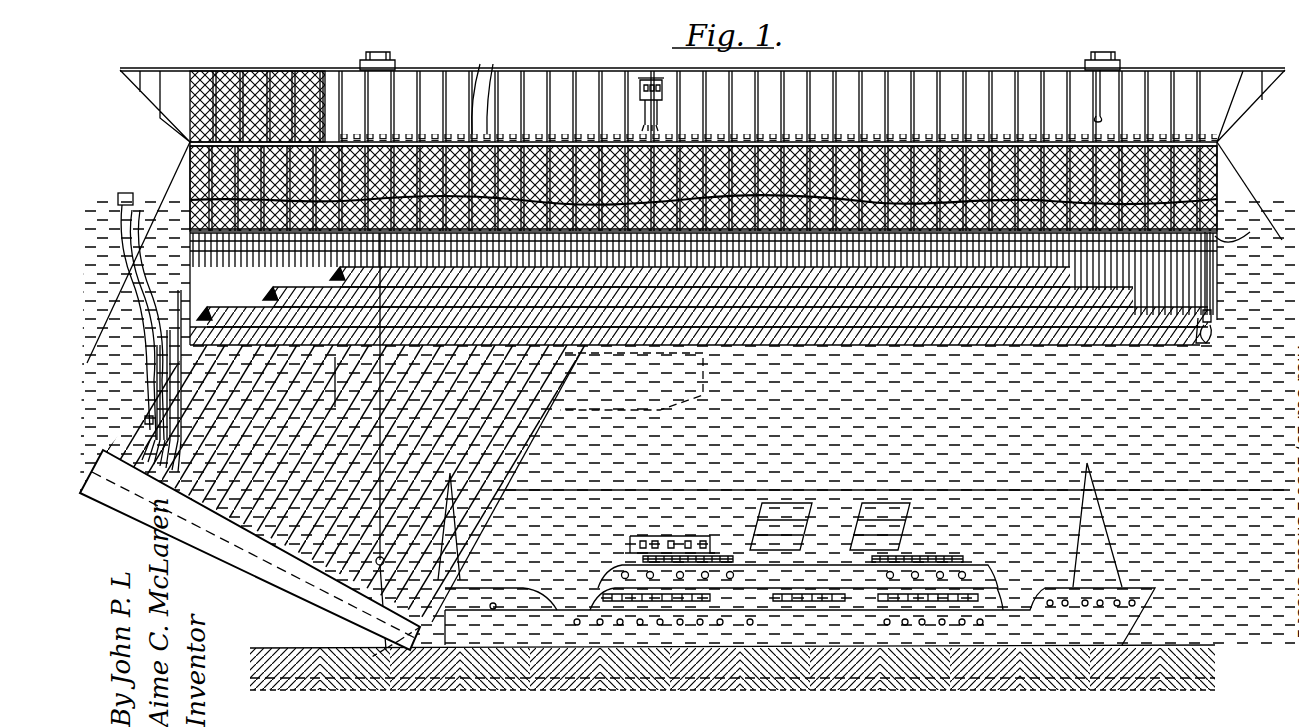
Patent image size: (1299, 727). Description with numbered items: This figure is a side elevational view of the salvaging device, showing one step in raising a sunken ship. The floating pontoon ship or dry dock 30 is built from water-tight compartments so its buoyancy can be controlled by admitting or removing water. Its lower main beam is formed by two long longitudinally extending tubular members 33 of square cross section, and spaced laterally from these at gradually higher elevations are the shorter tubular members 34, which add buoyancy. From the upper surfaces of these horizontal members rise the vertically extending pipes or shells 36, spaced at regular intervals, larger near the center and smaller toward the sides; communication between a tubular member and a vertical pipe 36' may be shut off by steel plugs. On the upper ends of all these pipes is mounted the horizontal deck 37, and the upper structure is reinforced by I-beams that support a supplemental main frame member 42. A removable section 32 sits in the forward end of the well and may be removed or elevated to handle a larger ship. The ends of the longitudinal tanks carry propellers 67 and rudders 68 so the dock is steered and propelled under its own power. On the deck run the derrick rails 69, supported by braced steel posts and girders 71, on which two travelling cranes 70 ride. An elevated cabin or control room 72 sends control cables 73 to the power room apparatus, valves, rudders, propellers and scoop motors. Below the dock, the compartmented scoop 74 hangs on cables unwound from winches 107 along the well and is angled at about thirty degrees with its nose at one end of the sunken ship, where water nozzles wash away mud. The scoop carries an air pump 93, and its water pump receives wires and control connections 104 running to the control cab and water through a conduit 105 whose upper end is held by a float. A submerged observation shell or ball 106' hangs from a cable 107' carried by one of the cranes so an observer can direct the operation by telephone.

The pontoon ship or dry dock 30 is at (1228, 176).
The removable section 32 is at (228, 88).
The longitudinally extending tubular members 33 is at (1160, 332).
The longitudinally extending tubular members 34 is at (1008, 308).
The vertically extending pipes or shells 36 is at (703, 274).
The vertical pipe 36' is at (1247, 273).
The horizontal platform or deck 37 is at (843, 142).
The supplemental main frame member 42 is at (1232, 236).
The propellers 67 is at (1200, 343).
The rudders 68 is at (1215, 328).
The travelling crane or derrick rails 69 is at (878, 70).
The travelling cranes 70 is at (397, 53).
The steel posts and girders 71 is at (796, 86).
The cabin or control room 72 is at (654, 80).
The control cables 73 is at (643, 100).
The scoop 74 is at (626, 418).
The air pump 93 is at (147, 372).
The wires and control connections 104 is at (137, 272).
The water conduit 105 is at (138, 388).
The submerged observation shell or ball 106' is at (333, 603).
The winches 107 is at (491, 89).
The cable 107' is at (452, 406).